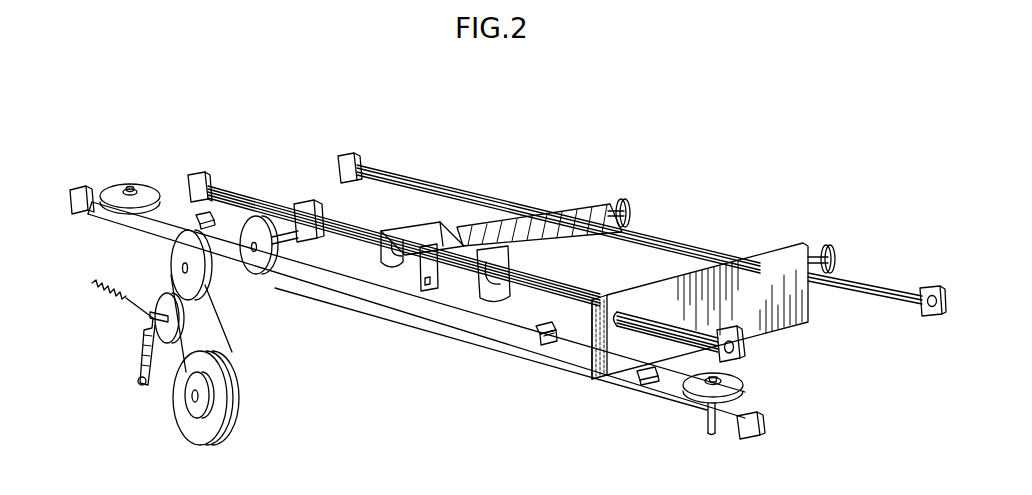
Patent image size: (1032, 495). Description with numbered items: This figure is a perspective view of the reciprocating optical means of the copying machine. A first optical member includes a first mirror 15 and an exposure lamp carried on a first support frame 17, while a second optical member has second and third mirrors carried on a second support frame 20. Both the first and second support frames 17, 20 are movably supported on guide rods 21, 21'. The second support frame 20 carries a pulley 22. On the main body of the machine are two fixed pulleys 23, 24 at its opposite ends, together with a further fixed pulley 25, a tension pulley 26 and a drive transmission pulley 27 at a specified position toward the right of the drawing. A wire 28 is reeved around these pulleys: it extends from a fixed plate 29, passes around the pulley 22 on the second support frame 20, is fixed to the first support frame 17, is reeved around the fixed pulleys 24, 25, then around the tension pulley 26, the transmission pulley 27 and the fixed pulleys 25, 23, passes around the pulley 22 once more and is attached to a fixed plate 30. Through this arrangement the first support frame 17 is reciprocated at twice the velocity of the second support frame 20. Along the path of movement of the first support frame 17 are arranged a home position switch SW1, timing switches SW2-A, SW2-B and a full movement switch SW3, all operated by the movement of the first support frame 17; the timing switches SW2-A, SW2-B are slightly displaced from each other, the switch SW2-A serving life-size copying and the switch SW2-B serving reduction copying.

The first mirror 15 is at (574, 220).
The first support frame 17 is at (416, 227).
The second support frame 20 is at (680, 276).
The guide rod 21 is at (394, 227).
The guide rod 21' is at (549, 199).
The pulley 22 is at (256, 278).
The fixed pulley 23 is at (134, 184).
The fixed pulley 24 is at (732, 384).
The fixed pulley 25 is at (178, 240).
The tension pulley 26 is at (158, 305).
The drive transmission pulley 27 is at (214, 432).
The wire 28 is at (554, 366).
The fixed plate 29 is at (760, 422).
The fixed plate 30 is at (82, 214).
The home position switch SW1 is at (650, 386).
The timing switch SW2-A is at (548, 346).
The timing switch SW2-B is at (535, 328).
The full movement switch SW3 is at (200, 214).